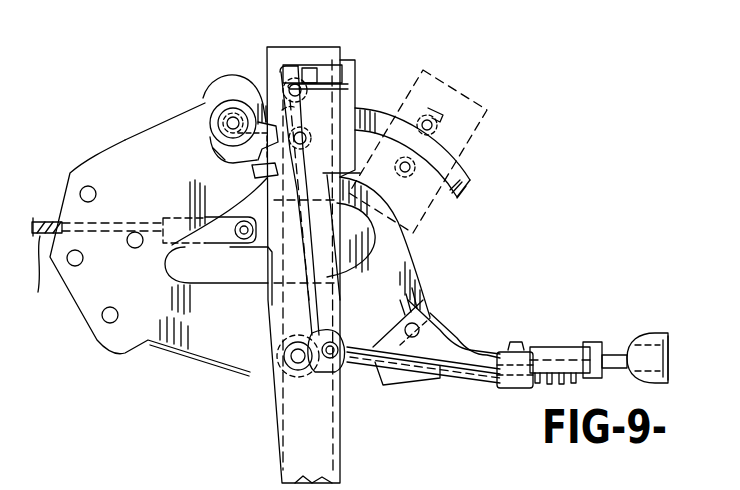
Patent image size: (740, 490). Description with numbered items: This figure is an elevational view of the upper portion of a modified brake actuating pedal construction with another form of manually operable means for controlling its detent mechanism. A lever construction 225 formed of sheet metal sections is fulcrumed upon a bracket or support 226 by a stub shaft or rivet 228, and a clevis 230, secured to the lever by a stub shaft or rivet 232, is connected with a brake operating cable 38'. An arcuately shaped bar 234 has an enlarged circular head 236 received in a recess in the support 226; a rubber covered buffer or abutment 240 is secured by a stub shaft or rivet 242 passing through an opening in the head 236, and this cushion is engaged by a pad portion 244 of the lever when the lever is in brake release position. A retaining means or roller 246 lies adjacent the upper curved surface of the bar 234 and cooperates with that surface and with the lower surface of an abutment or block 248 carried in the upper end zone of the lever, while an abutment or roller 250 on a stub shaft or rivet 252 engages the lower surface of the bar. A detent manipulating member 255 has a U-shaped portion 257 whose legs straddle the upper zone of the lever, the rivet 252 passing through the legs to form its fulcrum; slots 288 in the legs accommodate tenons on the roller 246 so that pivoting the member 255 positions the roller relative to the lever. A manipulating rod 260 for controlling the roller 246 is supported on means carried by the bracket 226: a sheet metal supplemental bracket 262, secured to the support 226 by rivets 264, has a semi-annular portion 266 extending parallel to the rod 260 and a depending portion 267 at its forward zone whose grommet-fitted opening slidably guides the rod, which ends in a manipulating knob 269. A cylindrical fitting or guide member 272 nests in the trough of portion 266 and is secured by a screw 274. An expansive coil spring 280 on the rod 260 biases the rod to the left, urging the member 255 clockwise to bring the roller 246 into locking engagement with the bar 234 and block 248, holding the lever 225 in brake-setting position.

The brake operating cable 38' is at (96, 268).
The lever construction 225 is at (272, 472).
The bracket or support 226 is at (193, 353).
The stub shaft or rivet 228 is at (292, 372).
The clevis 230 is at (209, 224).
The stub shaft or rivet 232 is at (254, 257).
The arcuately shaped bar 234 is at (478, 186).
The enlarged circular head 236 is at (228, 104).
The rubber covered buffer or abutment 240 is at (212, 146).
The stub shaft or rivet 242 is at (227, 121).
The pad portion 244 is at (252, 170).
The retaining means or roller 246 is at (277, 60).
The abutment or block 248 is at (295, 75).
The abutment or roller 250 is at (311, 119).
The stub shaft or rivet 252 is at (304, 144).
The detent manipulating member 255 is at (300, 305).
The U-shaped portion 257 is at (348, 63).
The manipulating rod 260 is at (449, 380).
The supplemental bracket or supporting member 262 is at (457, 330).
The rivets 264 is at (424, 306).
The portion of supplemental bracket 266 is at (650, 348).
The depending portion 267 is at (618, 372).
The manipulating knob or grip member 269 is at (658, 334).
The cylindrical fitting or guide member 272 is at (516, 388).
The screw 274 is at (524, 344).
The expansive coil spring 280 is at (566, 388).
The slots 288 is at (305, 65).